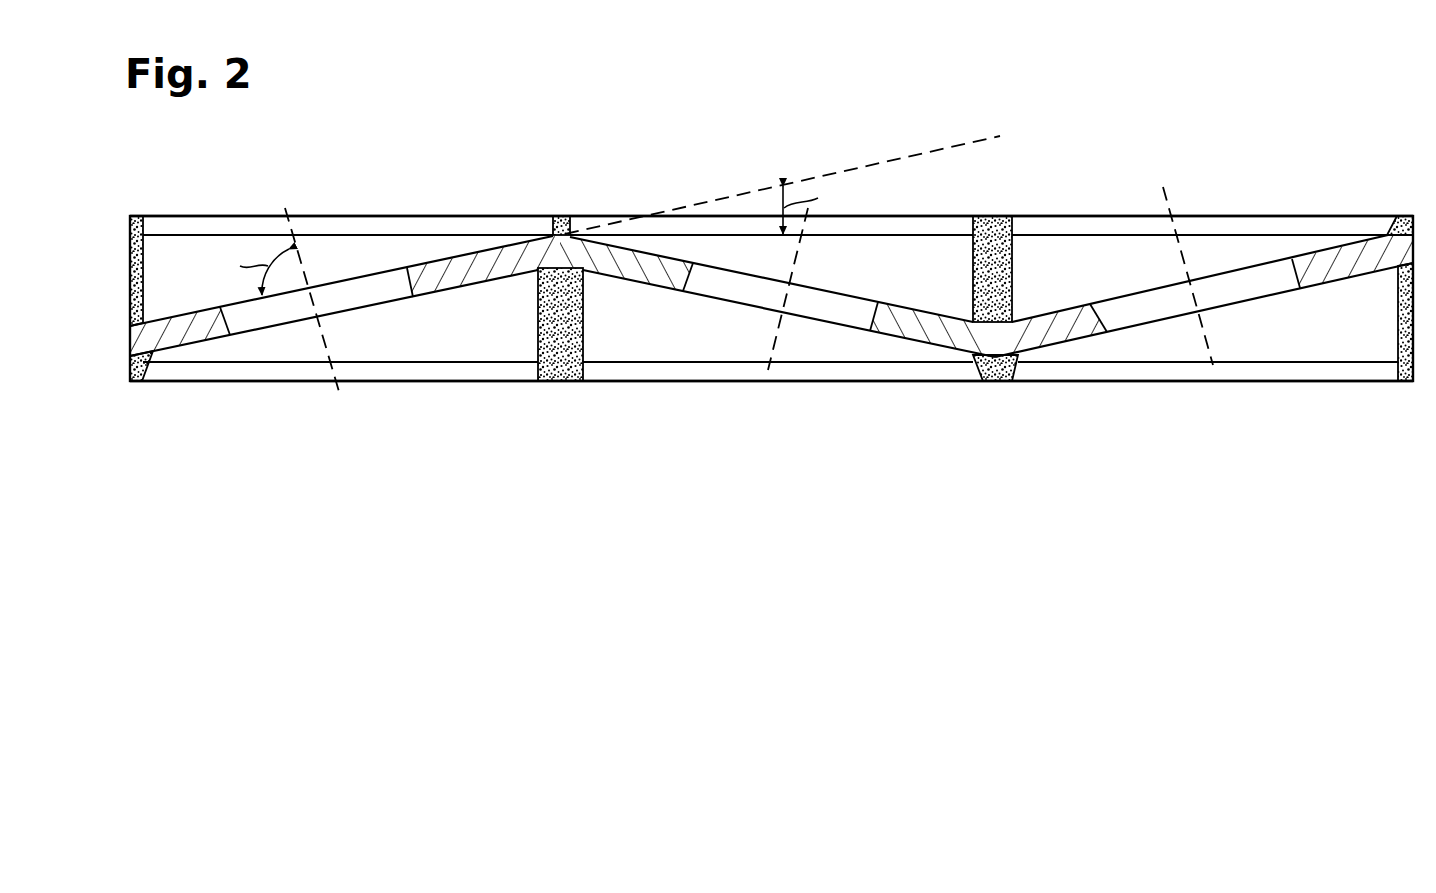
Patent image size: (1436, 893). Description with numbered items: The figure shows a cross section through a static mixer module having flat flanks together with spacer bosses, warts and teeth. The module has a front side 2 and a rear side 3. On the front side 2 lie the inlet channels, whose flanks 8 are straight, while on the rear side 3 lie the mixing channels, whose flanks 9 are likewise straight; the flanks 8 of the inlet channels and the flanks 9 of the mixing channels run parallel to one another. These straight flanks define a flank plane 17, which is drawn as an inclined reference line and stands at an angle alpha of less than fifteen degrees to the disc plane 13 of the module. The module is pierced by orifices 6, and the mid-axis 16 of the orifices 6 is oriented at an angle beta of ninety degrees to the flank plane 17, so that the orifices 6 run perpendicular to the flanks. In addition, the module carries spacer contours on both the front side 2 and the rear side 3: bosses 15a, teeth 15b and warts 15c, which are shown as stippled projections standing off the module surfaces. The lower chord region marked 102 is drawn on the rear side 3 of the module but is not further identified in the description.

The front side 2 is at (1222, 198).
The rear side 3 is at (285, 392).
The orifice 6 is at (1264, 287).
The flank of inlet channel 8 is at (445, 257).
The flank of mixing channel 9 is at (458, 292).
The disc plane 13 is at (1305, 233).
The boss 15a is at (998, 382).
The tooth 15b is at (568, 382).
The wart 15c is at (562, 213).
The mid-axis of the orifices 16 is at (284, 198).
The flank plane 17 is at (878, 162).
The lower chord segment 102 is at (1142, 397).